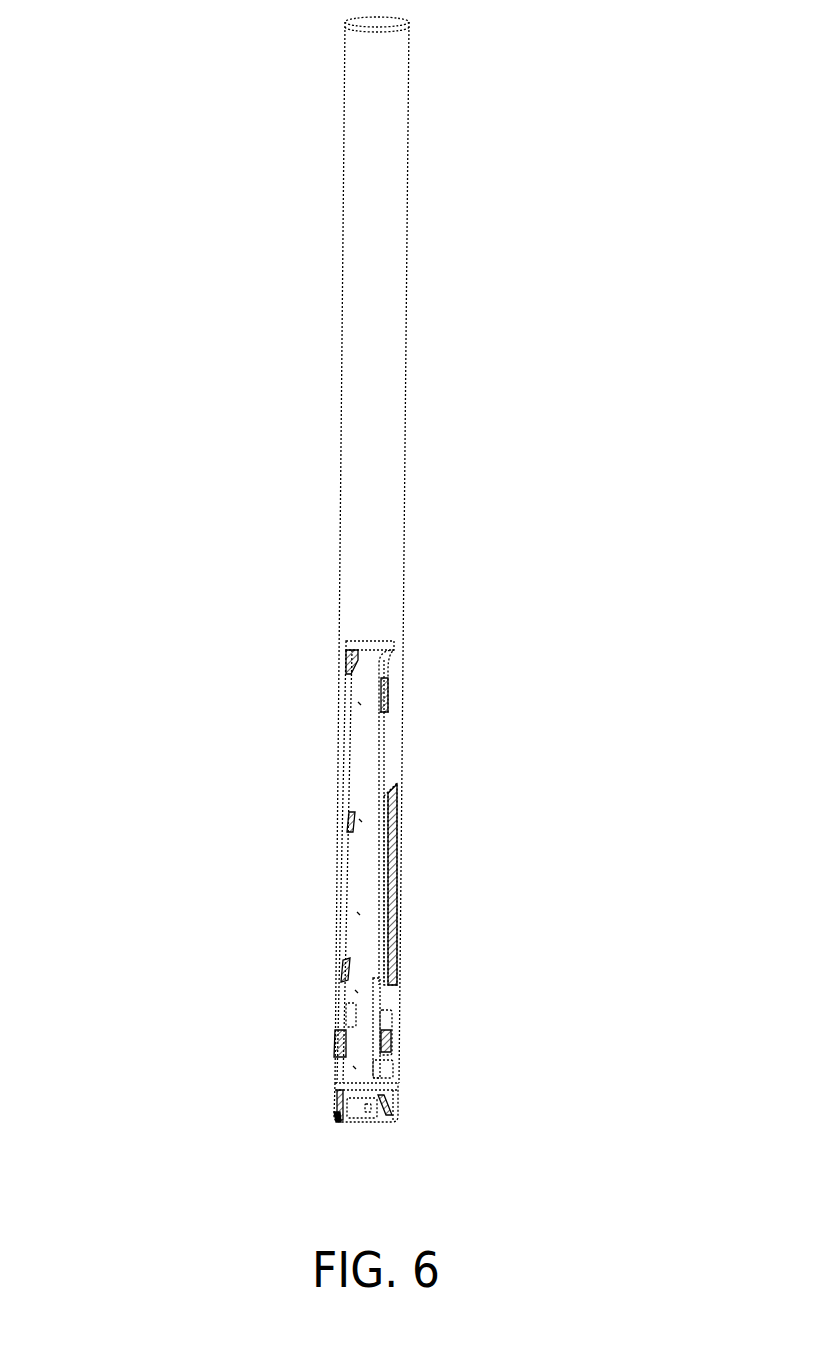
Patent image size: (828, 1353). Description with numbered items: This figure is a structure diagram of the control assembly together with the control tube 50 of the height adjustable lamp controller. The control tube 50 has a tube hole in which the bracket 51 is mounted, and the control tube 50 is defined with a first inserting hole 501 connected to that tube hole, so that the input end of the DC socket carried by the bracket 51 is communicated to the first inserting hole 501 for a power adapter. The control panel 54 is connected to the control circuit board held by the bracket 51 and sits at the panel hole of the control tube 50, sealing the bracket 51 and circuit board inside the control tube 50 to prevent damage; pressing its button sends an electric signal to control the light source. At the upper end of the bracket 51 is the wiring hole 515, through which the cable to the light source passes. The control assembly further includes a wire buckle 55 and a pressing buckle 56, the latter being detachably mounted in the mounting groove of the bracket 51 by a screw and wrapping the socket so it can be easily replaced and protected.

The control tube 50 is at (407, 178).
The bracket 51 is at (358, 875).
The wiring hole 515 is at (350, 660).
The wire buckle 55 is at (386, 697).
The control panel 54 is at (399, 826).
The pressing buckle 56 is at (386, 1033).
The first inserting hole 501 is at (334, 1033).